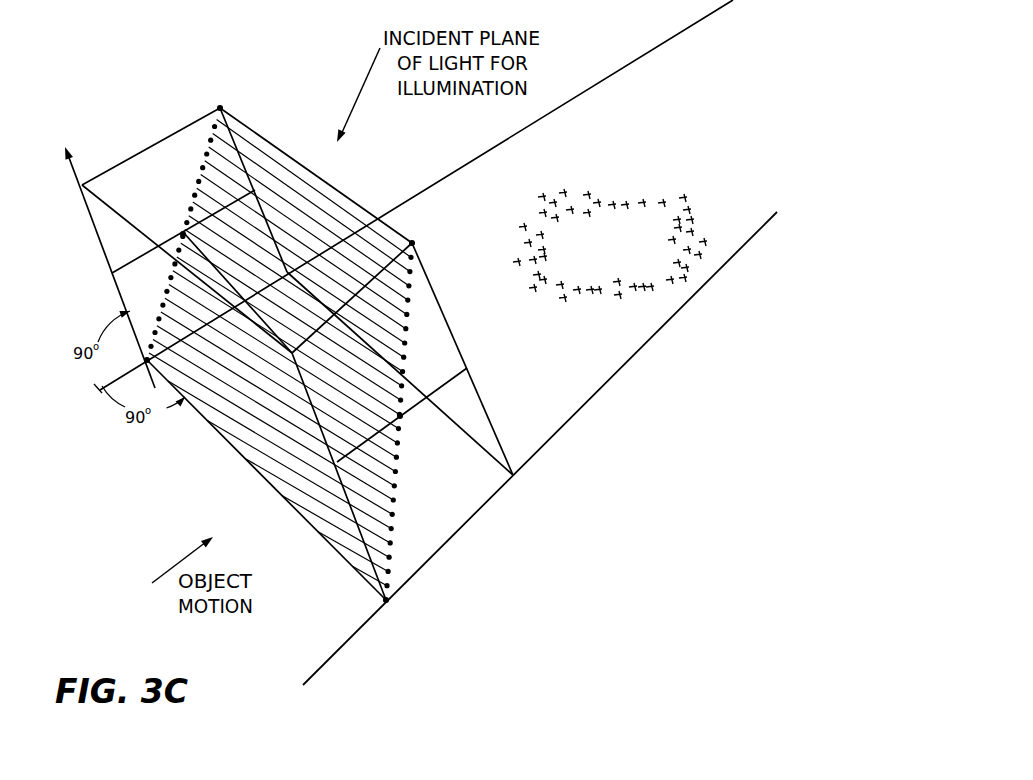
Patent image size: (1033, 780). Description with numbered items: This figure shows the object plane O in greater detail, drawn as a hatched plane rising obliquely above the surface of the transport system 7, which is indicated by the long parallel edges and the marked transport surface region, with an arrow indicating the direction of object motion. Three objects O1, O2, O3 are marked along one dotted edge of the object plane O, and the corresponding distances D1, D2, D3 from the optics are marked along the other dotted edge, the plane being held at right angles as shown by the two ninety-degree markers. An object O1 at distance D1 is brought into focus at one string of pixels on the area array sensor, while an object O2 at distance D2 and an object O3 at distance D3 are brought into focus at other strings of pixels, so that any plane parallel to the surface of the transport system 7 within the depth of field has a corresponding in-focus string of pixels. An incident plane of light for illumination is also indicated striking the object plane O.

The transport system 7 is at (583, 391).
The object plane O is at (124, 142).
The distance D1 is at (131, 359).
The distance D2 is at (183, 231).
The distance D3 is at (221, 108).
The object O1 is at (397, 612).
The object O2 is at (404, 426).
The object O3 is at (412, 243).